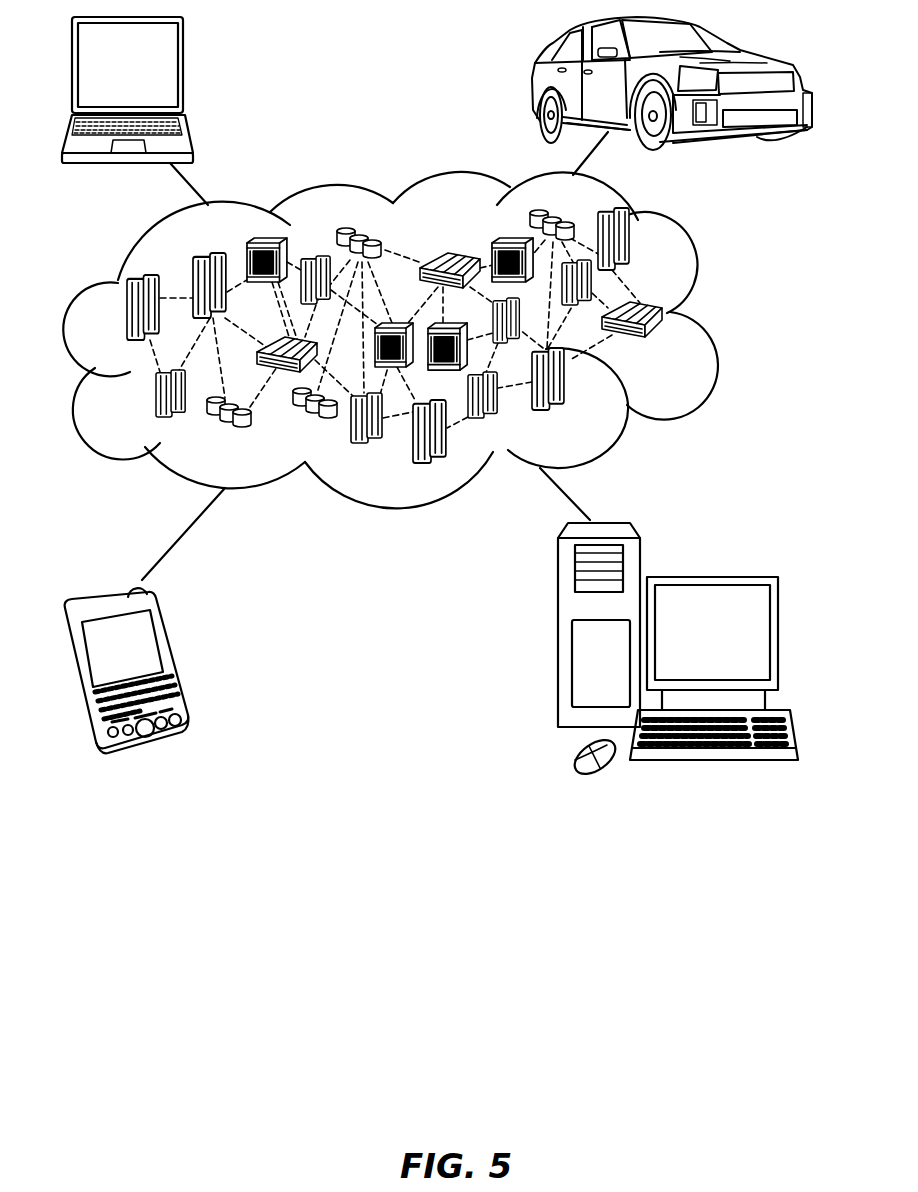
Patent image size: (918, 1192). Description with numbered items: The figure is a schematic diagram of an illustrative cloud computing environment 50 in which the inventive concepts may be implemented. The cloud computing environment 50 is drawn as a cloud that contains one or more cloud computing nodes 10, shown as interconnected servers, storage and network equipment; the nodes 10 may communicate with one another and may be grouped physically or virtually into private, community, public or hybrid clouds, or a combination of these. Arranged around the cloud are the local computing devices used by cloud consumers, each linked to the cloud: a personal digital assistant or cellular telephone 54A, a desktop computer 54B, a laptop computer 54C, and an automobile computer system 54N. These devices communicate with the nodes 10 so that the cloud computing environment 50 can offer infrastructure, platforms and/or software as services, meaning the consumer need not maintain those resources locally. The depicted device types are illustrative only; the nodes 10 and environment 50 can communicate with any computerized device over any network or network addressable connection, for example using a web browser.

The cloud computing node 10 is at (664, 346).
The cloud computing environment 50 is at (409, 356).
The personal digital assistant or cellular telephone 54A is at (175, 661).
The desktop computer 54B is at (712, 575).
The laptop computer 54C is at (183, 72).
The automobile computer system 54N is at (536, 87).